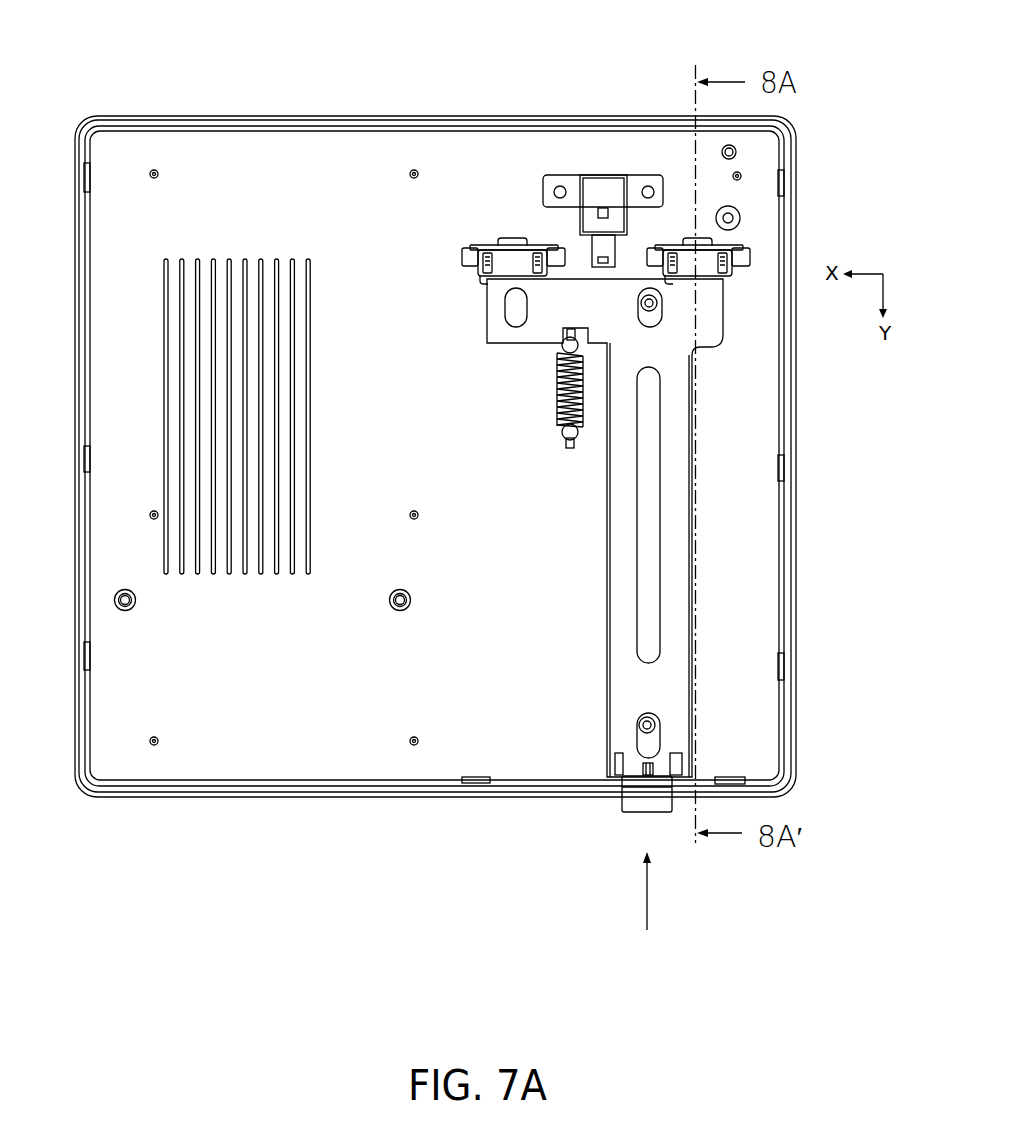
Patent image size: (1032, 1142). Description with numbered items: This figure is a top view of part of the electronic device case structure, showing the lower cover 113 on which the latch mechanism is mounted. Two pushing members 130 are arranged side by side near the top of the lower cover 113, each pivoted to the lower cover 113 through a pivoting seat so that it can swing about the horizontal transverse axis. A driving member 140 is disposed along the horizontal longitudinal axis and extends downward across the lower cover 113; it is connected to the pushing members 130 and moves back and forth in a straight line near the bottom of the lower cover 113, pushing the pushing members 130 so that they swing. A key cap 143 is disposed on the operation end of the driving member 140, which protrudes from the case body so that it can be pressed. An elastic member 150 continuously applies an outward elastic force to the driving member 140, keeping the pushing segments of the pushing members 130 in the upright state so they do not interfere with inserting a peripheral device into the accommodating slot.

The lower cover 113 is at (295, 116).
The pushing member 130 is at (512, 226).
The driving member 140 is at (596, 586).
The key cap 143 is at (643, 809).
The elastic member 150 is at (560, 390).